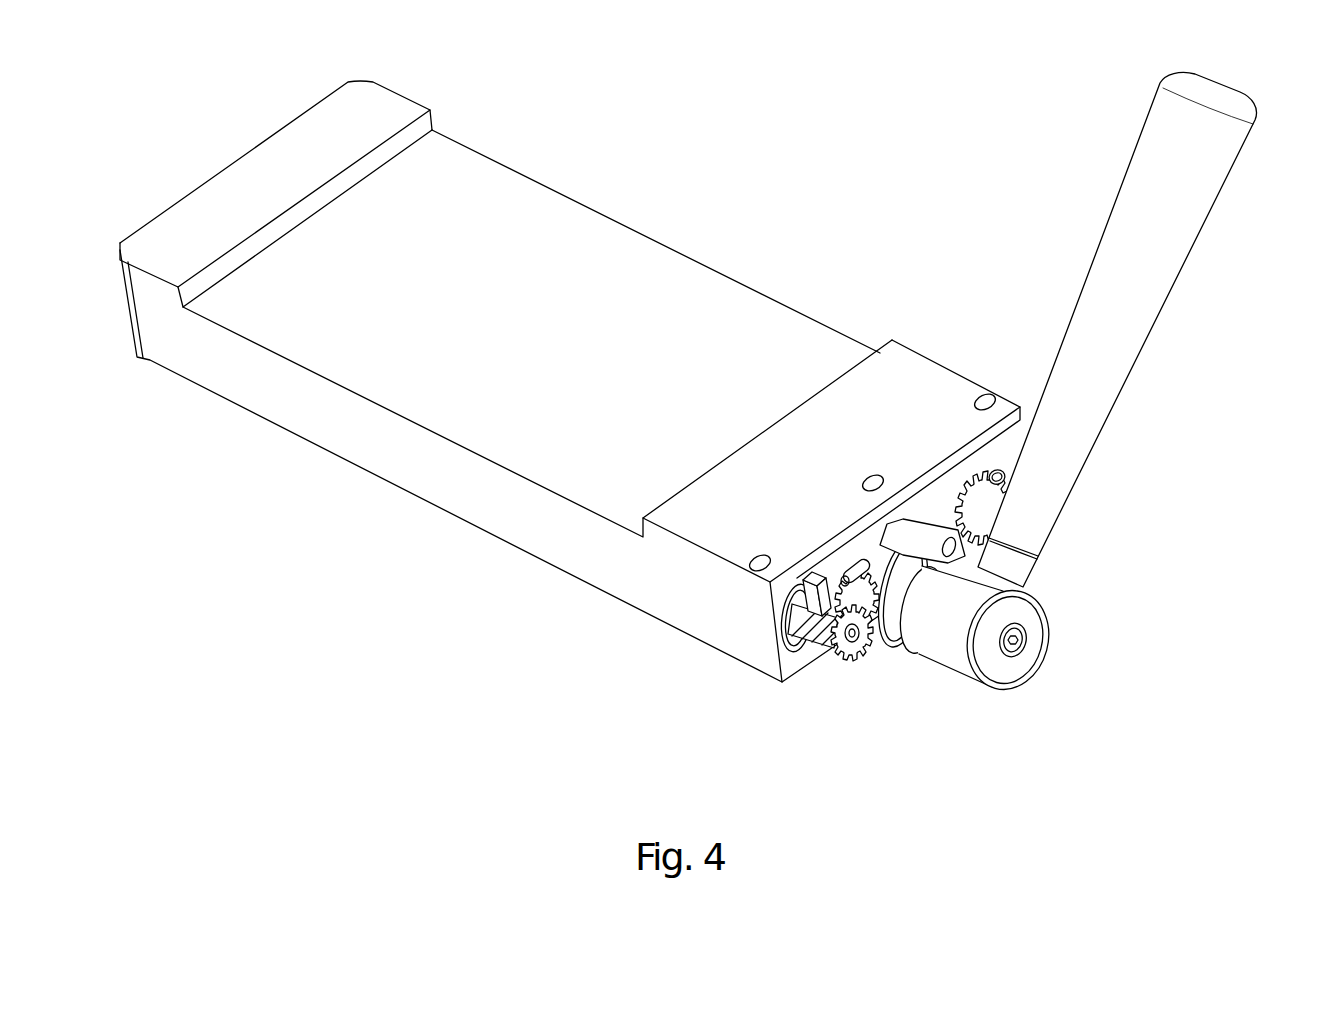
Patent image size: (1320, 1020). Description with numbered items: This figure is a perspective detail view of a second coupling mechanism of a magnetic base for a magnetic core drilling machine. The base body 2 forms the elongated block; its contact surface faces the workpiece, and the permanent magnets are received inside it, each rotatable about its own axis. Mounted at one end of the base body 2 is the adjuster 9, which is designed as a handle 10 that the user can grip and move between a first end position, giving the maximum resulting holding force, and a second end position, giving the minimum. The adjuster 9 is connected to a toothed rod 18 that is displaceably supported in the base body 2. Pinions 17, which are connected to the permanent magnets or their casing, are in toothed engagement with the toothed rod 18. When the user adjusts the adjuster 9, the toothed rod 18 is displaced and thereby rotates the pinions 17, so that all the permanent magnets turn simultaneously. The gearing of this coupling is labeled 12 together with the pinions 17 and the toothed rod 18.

The base body 2 is at (442, 330).
The adjuster 9 is at (1076, 385).
The handle 10 is at (1043, 528).
The gear 12 is at (894, 511).
The pinions 17 is at (835, 643).
The toothed rod 18 is at (887, 557).